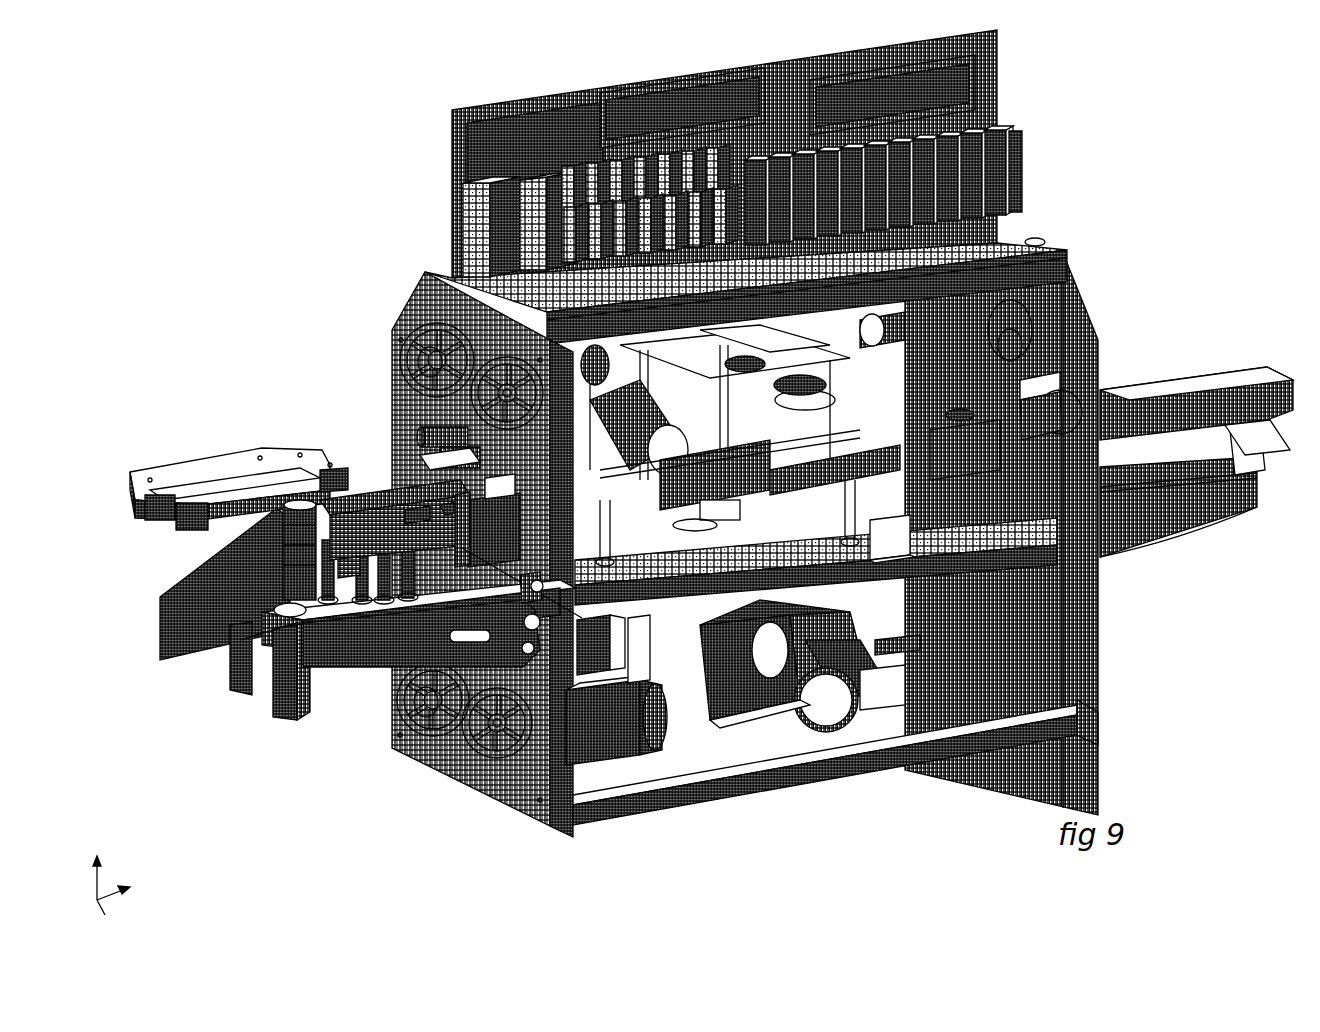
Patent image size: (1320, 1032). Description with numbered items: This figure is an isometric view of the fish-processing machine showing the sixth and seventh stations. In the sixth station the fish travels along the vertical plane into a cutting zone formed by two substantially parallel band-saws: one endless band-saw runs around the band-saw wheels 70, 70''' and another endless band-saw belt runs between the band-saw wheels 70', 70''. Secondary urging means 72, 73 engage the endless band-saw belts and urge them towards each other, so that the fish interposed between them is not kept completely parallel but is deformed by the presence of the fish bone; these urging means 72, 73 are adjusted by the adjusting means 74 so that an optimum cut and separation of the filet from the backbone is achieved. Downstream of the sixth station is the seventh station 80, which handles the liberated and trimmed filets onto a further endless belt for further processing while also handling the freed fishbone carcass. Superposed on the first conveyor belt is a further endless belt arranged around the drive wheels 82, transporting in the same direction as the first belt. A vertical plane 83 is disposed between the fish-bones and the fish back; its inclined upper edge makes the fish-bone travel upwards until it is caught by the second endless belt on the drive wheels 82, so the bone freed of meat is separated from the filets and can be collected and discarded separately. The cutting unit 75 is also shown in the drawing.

The band-saw wheel 70 is at (457, 287).
The band-saw wheel 70' is at (393, 303).
The band-saw wheel 70'' is at (419, 763).
The band-saw wheel 70''' is at (497, 804).
The secondary urging means 72 is at (583, 797).
The secondary urging means 73 is at (430, 432).
The adjusting means 74 is at (660, 745).
The cutting unit 75 is at (478, 548).
The seventh station 80 is at (335, 607).
The drive wheels 82 is at (345, 492).
The vertical plane 83 is at (180, 655).